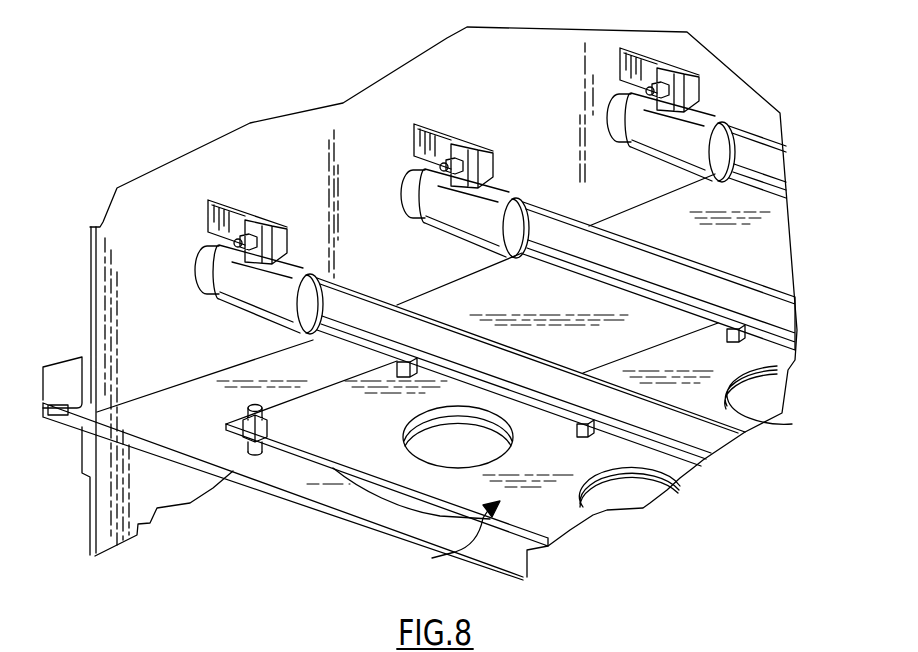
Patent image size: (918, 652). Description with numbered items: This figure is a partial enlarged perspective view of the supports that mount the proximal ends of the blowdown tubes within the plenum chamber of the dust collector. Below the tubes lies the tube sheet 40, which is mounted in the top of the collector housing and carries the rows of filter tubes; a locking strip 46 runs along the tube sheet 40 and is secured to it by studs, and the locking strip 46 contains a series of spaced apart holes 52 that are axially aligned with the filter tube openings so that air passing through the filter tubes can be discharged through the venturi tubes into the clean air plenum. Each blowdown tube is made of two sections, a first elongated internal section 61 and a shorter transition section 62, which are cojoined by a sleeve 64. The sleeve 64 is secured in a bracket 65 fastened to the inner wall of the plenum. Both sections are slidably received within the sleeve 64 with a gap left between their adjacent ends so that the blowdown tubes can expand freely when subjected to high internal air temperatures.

The tube sheet 40 is at (317, 507).
The locking strip 46 is at (450, 538).
The spaced apart holes 52 is at (408, 417).
The first elongated internal section 61 is at (745, 297).
The transition section 62 is at (405, 213).
The sleeve 64 is at (514, 192).
The bracket 65 is at (450, 120).